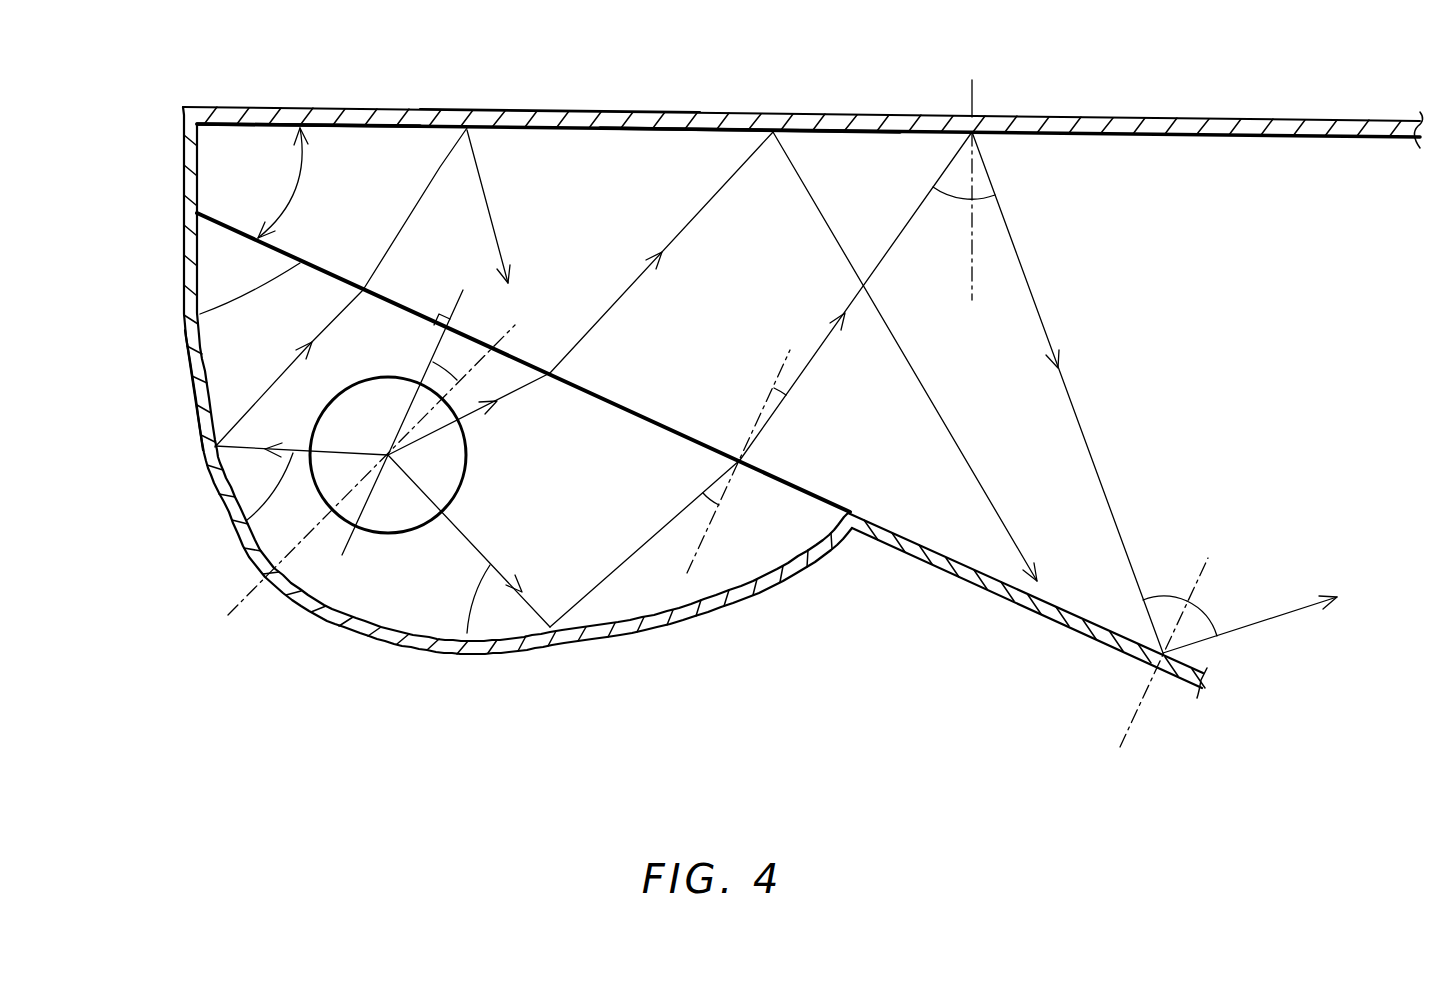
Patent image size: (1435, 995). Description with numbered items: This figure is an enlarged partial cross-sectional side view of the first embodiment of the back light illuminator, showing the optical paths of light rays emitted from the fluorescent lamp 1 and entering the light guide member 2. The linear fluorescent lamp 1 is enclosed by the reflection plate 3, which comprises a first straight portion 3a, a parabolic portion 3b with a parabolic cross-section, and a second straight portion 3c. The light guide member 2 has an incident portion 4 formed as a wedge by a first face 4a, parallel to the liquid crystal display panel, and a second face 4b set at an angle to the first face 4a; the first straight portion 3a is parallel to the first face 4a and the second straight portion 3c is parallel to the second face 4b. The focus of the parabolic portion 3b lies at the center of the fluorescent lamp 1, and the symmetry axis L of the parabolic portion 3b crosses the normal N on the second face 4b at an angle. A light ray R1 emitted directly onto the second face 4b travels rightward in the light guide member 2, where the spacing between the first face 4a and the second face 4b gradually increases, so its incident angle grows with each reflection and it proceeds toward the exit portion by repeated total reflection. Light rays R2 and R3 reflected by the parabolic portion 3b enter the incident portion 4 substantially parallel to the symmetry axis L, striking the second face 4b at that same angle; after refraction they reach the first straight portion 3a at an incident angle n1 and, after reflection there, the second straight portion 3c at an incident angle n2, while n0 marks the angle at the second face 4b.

The fluorescent lamp 1 is at (390, 533).
The light guide member 2 is at (1127, 153).
The reflection plate 3 is at (683, 633).
The first straight portion 3a is at (567, 112).
The parabolic portion 3b is at (190, 413).
The second straight portion 3c is at (977, 588).
The incident portion 4 is at (348, 142).
The first face 4a is at (720, 125).
The second face 4b is at (183, 308).
The light ray R1 is at (630, 290).
The light ray R2 is at (467, 637).
The light ray R3 is at (230, 542).
The symmetry axis L is at (245, 602).
The normal N is at (350, 547).
The incidence angle n0 is at (780, 380).
The incident angle η1 n1 is at (964, 190).
The incident angle η2 n2 is at (1184, 646).